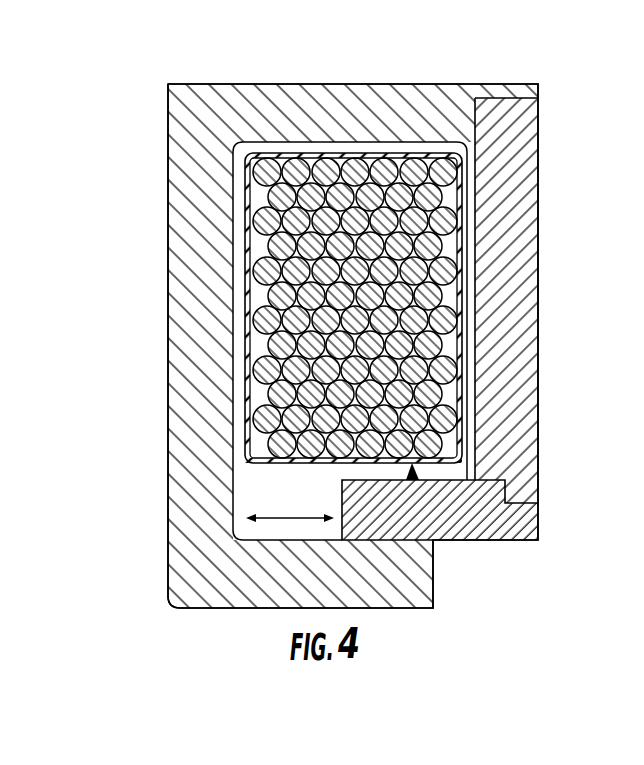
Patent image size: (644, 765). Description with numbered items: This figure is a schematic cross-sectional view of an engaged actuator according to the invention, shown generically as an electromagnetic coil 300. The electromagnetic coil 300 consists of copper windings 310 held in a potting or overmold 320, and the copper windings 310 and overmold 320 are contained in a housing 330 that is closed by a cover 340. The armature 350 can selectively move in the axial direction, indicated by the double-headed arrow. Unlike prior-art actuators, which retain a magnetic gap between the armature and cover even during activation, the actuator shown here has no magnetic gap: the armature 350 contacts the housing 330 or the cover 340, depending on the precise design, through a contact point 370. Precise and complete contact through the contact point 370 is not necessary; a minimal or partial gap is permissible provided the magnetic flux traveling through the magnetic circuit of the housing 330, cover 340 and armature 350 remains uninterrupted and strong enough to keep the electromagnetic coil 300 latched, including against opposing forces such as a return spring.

The electromagnetic coil 300 is at (126, 87).
The copper windings 310 is at (328, 158).
The overmold 320 is at (367, 153).
The housing 330 is at (216, 338).
The cover 340 is at (525, 284).
The armature 350 is at (283, 465).
The contact point 370 is at (540, 503).